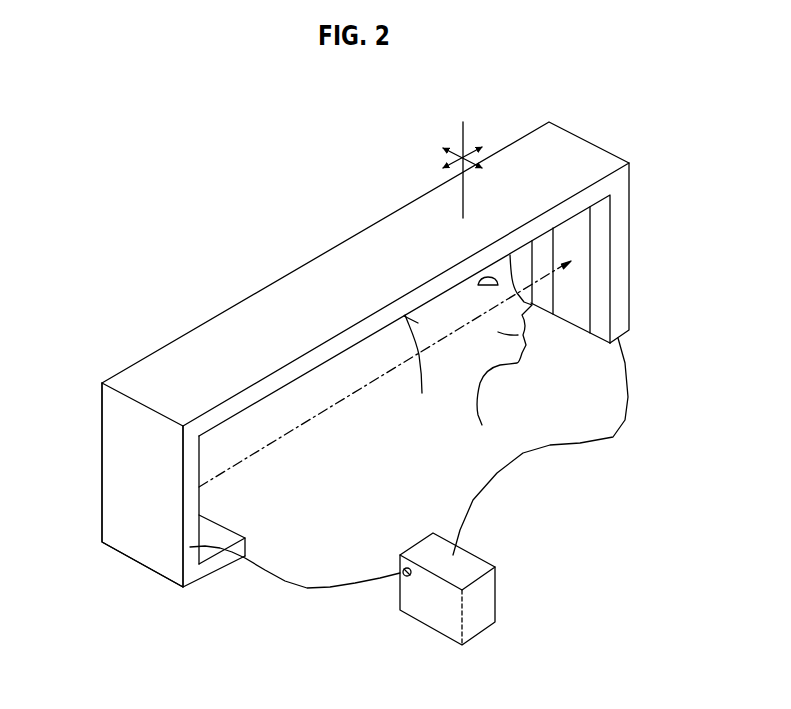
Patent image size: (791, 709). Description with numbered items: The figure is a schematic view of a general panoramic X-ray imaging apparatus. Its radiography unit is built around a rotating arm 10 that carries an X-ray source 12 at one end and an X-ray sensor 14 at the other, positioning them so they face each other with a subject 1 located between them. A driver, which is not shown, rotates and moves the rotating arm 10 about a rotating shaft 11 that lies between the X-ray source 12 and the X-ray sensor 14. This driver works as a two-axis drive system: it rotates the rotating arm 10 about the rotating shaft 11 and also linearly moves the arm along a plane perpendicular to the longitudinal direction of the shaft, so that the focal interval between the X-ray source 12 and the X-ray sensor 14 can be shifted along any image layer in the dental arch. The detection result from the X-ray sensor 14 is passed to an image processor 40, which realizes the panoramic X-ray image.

The subject 1 is at (442, 315).
The rotating arm 10 is at (535, 140).
The rotating shaft 11 is at (461, 140).
The X-ray source 12 is at (117, 457).
The X-ray sensor 14 is at (583, 243).
The image processor 40 is at (473, 620).